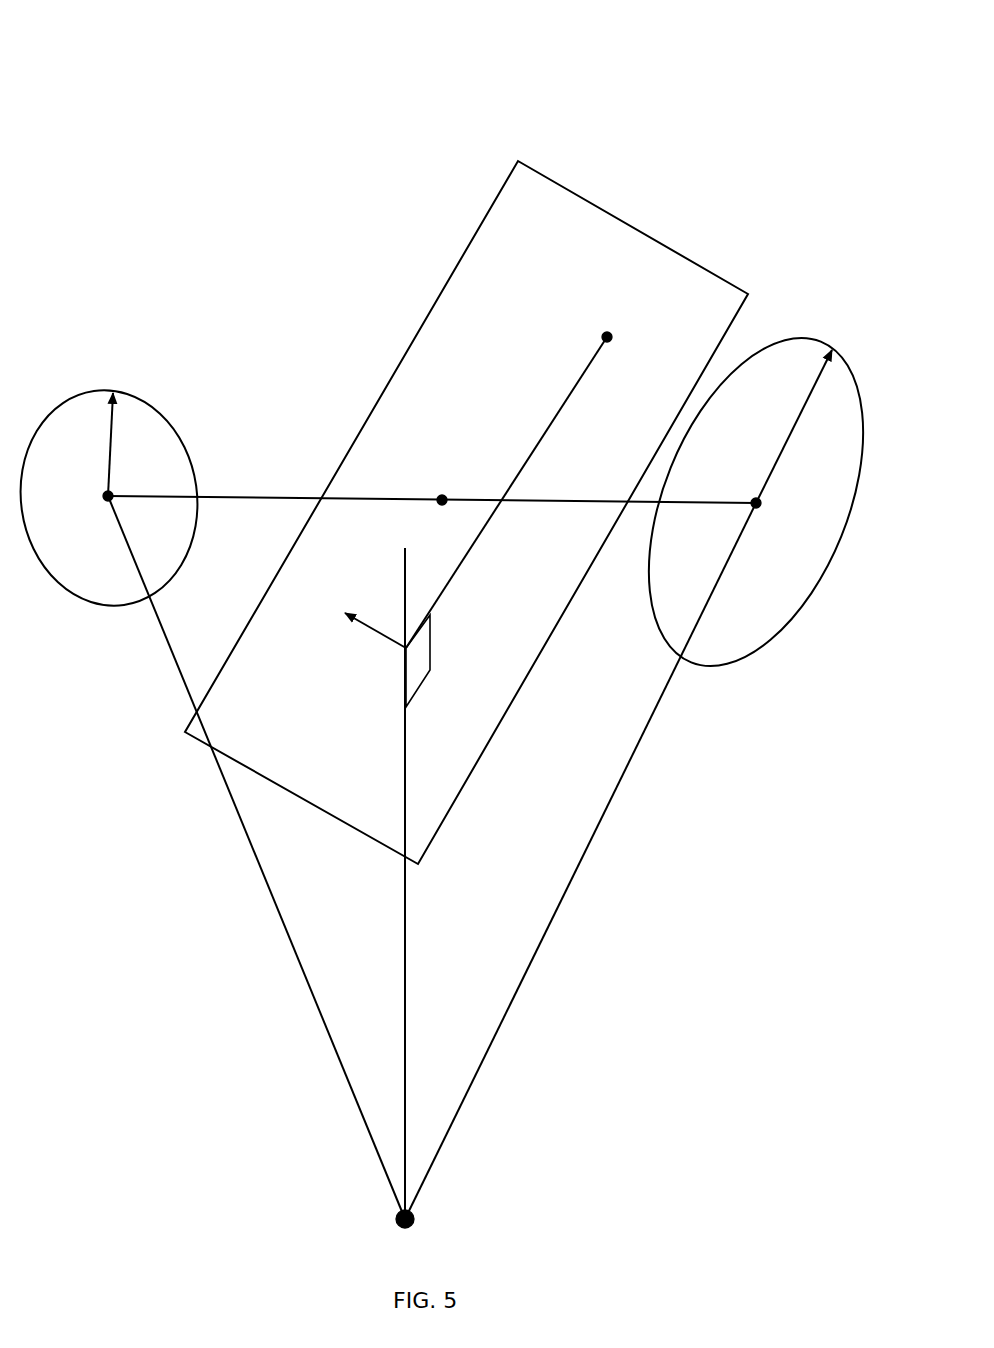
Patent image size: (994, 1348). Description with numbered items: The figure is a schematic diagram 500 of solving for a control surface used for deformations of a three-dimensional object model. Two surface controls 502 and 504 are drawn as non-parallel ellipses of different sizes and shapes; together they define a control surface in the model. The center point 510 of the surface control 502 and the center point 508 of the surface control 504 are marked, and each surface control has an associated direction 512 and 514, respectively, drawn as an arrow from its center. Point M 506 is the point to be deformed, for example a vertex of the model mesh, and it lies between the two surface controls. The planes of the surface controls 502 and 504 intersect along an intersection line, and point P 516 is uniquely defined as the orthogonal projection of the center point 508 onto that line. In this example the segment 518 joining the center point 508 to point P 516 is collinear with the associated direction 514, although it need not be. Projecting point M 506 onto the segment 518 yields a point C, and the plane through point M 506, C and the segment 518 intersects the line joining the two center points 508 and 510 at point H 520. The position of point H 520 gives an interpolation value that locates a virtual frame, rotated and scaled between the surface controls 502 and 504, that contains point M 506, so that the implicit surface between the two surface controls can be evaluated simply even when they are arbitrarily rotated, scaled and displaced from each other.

The schematic diagram 500 is at (95, 66).
The surface control 502 is at (77, 587).
The surface control 504 is at (782, 618).
The point M 506 is at (609, 333).
The point O1 508 is at (761, 502).
The point O2 510 is at (102, 497).
The associated direction 512 is at (111, 470).
The associated direction 514 is at (786, 443).
The point P 516 is at (396, 1218).
The segment O1P 518 is at (513, 999).
The point H 520 is at (441, 497).